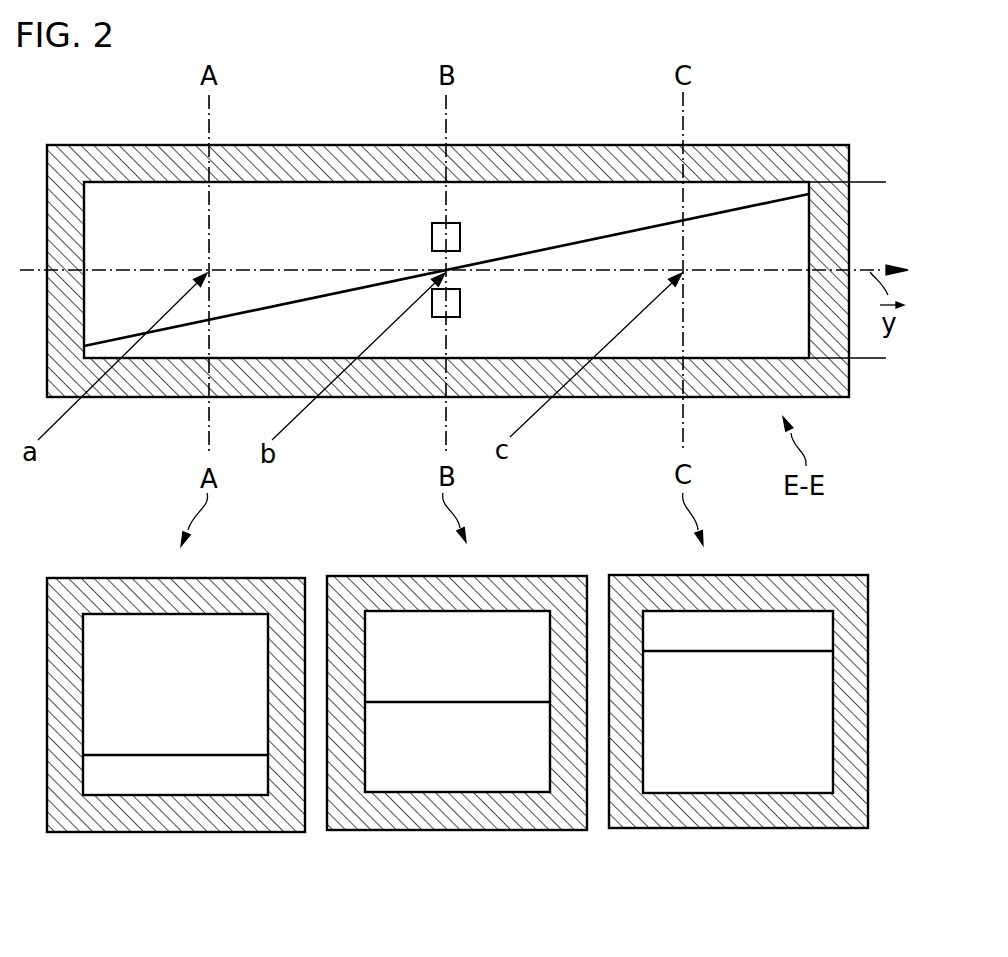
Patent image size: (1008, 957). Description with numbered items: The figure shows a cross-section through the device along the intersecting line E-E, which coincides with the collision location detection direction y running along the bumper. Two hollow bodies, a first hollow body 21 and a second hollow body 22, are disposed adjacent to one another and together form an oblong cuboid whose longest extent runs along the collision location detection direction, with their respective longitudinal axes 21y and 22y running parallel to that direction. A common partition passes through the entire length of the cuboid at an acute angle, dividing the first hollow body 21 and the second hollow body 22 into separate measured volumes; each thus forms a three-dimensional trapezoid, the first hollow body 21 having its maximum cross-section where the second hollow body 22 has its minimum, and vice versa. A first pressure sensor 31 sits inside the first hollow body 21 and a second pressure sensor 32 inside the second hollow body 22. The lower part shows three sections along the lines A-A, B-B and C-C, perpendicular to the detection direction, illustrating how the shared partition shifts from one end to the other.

The first hollow body 21 is at (543, 195).
The second hollow body 22 is at (397, 347).
The first pressure sensor 31 is at (438, 240).
The second pressure sensor 32 is at (457, 302).
The longitudinal axis of the first hollow body 21y is at (870, 180).
The longitudinal axis of the second hollow body 22y is at (872, 359).